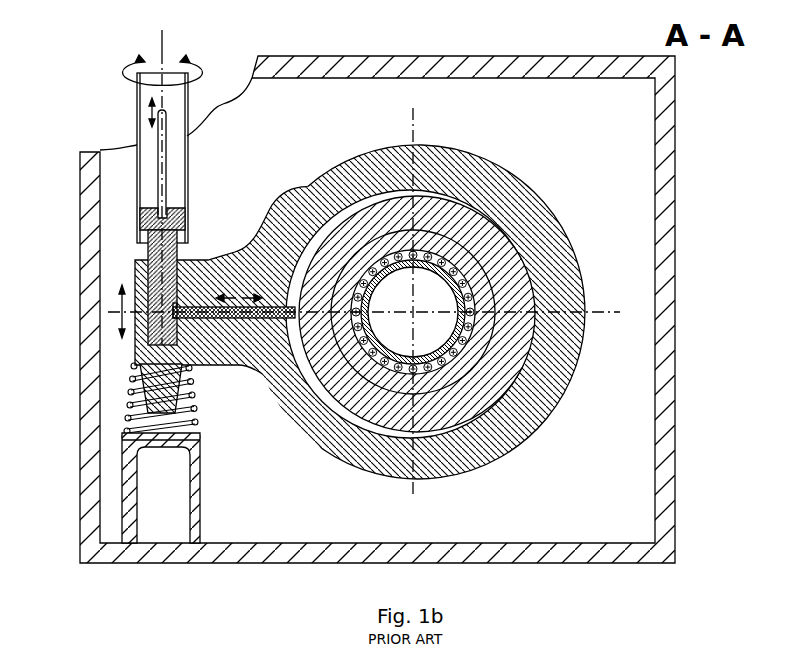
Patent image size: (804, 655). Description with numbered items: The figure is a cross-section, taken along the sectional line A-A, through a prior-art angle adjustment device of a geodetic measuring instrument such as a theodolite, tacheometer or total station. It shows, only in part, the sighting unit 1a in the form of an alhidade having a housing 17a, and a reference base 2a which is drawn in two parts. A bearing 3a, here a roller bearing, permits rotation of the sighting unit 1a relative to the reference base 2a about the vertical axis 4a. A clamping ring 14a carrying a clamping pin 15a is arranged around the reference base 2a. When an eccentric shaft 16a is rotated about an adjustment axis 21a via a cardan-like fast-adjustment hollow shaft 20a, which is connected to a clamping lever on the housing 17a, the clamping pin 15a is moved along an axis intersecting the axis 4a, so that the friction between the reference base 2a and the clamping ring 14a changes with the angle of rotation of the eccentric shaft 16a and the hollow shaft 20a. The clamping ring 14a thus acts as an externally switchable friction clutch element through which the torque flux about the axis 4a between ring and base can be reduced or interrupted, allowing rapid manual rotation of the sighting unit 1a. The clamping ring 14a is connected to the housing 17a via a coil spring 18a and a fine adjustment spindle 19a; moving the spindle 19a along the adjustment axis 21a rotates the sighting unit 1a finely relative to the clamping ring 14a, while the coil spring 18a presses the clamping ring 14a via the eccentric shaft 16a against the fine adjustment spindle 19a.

The sighting unit 1a is at (460, 273).
The reference base 2a is at (478, 283).
The bearing 3a is at (360, 250).
The axis 4a is at (407, 250).
The clamping ring 14a is at (273, 345).
The clamping pin 15a is at (208, 318).
The eccentric shaft 16a is at (166, 330).
The housing 17a is at (648, 552).
The coil spring 18a is at (135, 417).
The fine adjustment spindle 19a is at (187, 103).
The fast-adjustment hollow shaft 20a is at (137, 125).
The adjustment axis 21a is at (162, 50).